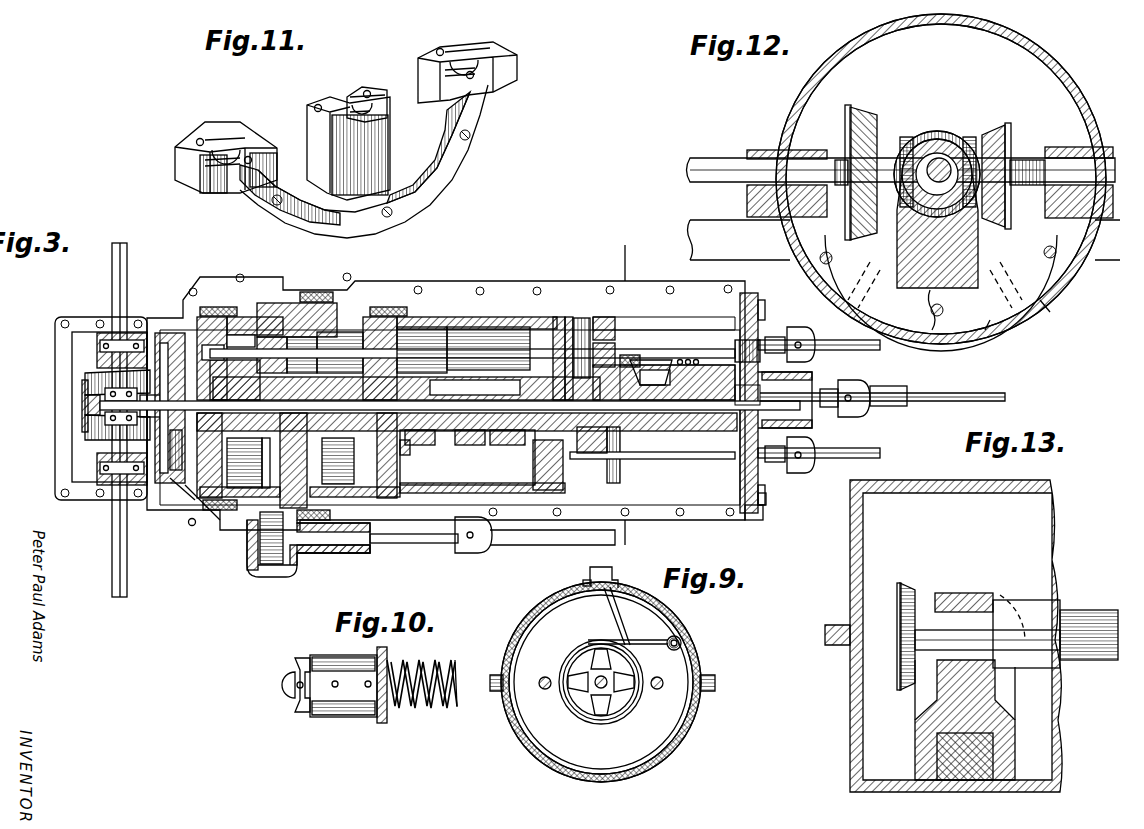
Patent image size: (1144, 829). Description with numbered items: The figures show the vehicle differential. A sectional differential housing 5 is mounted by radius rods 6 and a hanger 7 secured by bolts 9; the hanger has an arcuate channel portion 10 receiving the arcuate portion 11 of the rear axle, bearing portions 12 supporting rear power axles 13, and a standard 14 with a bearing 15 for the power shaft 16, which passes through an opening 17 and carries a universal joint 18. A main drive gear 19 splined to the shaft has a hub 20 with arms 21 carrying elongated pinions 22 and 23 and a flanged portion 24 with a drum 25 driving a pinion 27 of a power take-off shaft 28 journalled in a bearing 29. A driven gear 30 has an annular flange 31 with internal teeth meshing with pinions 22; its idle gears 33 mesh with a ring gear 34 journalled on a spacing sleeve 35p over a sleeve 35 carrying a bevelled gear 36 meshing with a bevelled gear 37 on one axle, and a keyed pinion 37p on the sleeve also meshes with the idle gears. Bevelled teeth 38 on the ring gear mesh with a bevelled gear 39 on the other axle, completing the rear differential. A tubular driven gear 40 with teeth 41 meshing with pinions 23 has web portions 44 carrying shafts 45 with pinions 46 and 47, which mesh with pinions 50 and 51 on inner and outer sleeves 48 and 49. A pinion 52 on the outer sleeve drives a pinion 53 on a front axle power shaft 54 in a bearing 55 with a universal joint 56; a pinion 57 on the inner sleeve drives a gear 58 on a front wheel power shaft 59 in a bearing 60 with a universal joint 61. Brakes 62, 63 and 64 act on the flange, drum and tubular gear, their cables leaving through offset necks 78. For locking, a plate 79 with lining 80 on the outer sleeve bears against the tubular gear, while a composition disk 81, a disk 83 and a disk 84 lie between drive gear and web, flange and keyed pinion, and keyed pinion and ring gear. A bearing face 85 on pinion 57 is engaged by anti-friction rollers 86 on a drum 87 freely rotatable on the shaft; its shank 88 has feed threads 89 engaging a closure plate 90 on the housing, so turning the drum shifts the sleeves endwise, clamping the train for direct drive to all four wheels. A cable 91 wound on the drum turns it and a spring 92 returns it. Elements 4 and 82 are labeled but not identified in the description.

In FIG. 3, the end plate 4 is at (175, 300).
In FIG. 3, the differential housing 5 is at (290, 303).
In FIG. 9, the differential housing 5 is at (680, 638).
In FIG. 3, the radius rods 6 is at (438, 281).
In FIG. 11, the hanger 7 is at (455, 176).
In FIG. 12, the hanger 7 is at (904, 179).
In FIG. 13, the hanger 7 is at (915, 748).
In FIG. 3, the bolts 9 is at (624, 393).
In FIG. 12, the bolts 9 is at (1048, 308).
In FIG. 11, the arcuate shaped portion 10 is at (478, 130).
In FIG. 12, the arcuate shaped portion 10 is at (938, 293).
In FIG. 12, the arcuate portion of the rear axle 11 is at (1000, 322).
In FIG. 13, the arcuate portion of the rear axle 11 is at (993, 755).
In FIG. 11, the bearing portions 12 is at (518, 80).
In FIG. 3, the rear power axles 13 is at (117, 272).
In FIG. 12, the rear power axles 13 is at (712, 160).
In FIG. 11, the standard 14 is at (310, 127).
In FIG. 12, the standard 14 is at (975, 242).
In FIG. 11, the bearing 15 is at (365, 88).
In FIG. 12, the bearing 15 is at (900, 220).
In FIG. 13, the bearing 15 is at (995, 685).
In FIG. 3, the power shaft 16 is at (942, 394).
In FIG. 12, the power shaft 16 is at (940, 158).
In FIG. 9, the power shaft 16 is at (598, 692).
In FIG. 3, the opening 17 is at (752, 520).
In FIG. 9, the opening 17 is at (675, 727).
In FIG. 3, the universal joint 18 is at (870, 417).
In FIG. 3, the main drive gear 19 is at (251, 463).
In FIG. 3, the hub 20 is at (467, 460).
In FIG. 3, the arms 21 is at (388, 320).
In FIG. 3, the pinions 22 is at (258, 303).
In FIG. 3, the pinions 23 is at (350, 325).
In FIG. 3, the flanged portion 24 is at (281, 463).
In FIG. 3, the drum 25 is at (318, 292).
In FIG. 3, the pinion 27 is at (270, 572).
In FIG. 3, the power take-off shaft 28 is at (405, 544).
In FIG. 3, the bearing 29 is at (365, 553).
In FIG. 3, the driven gear 30 is at (200, 530).
In FIG. 3, the annular flange 31 is at (226, 317).
In FIG. 3, the idle gears 33 is at (185, 330).
In FIG. 3, the ring gear 34 is at (185, 340).
In FIG. 3, the sleeve 35 is at (100, 418).
In FIG. 13, the sleeve 35 is at (965, 605).
In FIG. 3, the spacing sleeve 35p is at (125, 470).
In FIG. 13, the spacing sleeve 35p is at (1025, 598).
In FIG. 3, the bevelled gear 36 is at (84, 395).
In FIG. 12, the bevelled gear 36 is at (920, 132).
In FIG. 13, the bevelled gear 36 is at (912, 595).
In FIG. 3, the bevelled gear 37 is at (90, 375).
In FIG. 12, the bevelled gear 37 is at (1008, 140).
In FIG. 3, the pinion 37p is at (172, 372).
In FIG. 3, the bevelled gear teeth 38 is at (175, 480).
In FIG. 3, the bevelled gear 39 is at (95, 440).
In FIG. 12, the bevelled gear 39 is at (848, 140).
In FIG. 3, the tubular driven gear 40 is at (462, 318).
In FIG. 3, the teeth 41 is at (382, 317).
In FIG. 3, the web portions 44 is at (535, 465).
In FIG. 3, the shafts 45 is at (584, 340).
In FIG. 3, the pinions 46 is at (406, 387).
In FIG. 3, the pinions 47 is at (483, 335).
In FIG. 3, the inner sleeve 48 is at (429, 435).
In FIG. 3, the outer sleeve 49 is at (470, 442).
In FIG. 3, the pinion 50 is at (416, 451).
In FIG. 3, the pinion 51 is at (507, 444).
In FIG. 3, the pinion 52 is at (612, 370).
In FIG. 3, the pinion 53 is at (600, 320).
In FIG. 3, the front axle power shaft 54 is at (847, 351).
In FIG. 9, the front axle power shaft 54 is at (545, 677).
In FIG. 3, the bearing 55 is at (616, 335).
In FIG. 3, the universal joint 56 is at (800, 335).
In FIG. 3, the pinion 57 is at (640, 368).
In FIG. 3, the gear 58 is at (628, 476).
In FIG. 3, the front wheel power shaft 59 is at (880, 455).
In FIG. 9, the front wheel power shaft 59 is at (657, 677).
In FIG. 3, the bearing 60 is at (525, 542).
In FIG. 3, the universal joint 61 is at (800, 470).
In FIG. 3, the brake 62 is at (218, 306).
In FIG. 3, the brake 63 is at (335, 320).
In FIG. 3, the brake 64 is at (410, 307).
In FIG. 9, the offset neck 78 is at (585, 580).
In FIG. 3, the plate 79 is at (583, 320).
In FIG. 3, the lining 80 is at (558, 318).
In FIG. 3, the composition disk 81 is at (348, 461).
In FIG. 3, the pin 82 is at (202, 512).
In FIG. 3, the disk 83 is at (190, 500).
In FIG. 3, the disk 84 is at (172, 447).
In FIG. 3, the bearing face 85 is at (632, 443).
In FIG. 3, the anti-friction rollers 86 is at (747, 395).
In FIG. 9, the anti-friction rollers 86 is at (625, 700).
In FIG. 10, the anti-friction rollers 86 is at (298, 705).
In FIG. 3, the drum 87 is at (677, 382).
In FIG. 9, the drum 87 is at (585, 695).
In FIG. 10, the drum 87 is at (355, 710).
In FIG. 3, the shank 88 is at (800, 378).
In FIG. 10, the shank 88 is at (455, 698).
In FIG. 3, the feed threads 89 is at (762, 350).
In FIG. 10, the feed threads 89 is at (440, 666).
In FIG. 3, the closure plate 90 is at (766, 496).
In FIG. 9, the closure plate 90 is at (688, 705).
In FIG. 3, the cable 91 is at (682, 378).
In FIG. 9, the cable 91 is at (620, 620).
In FIG. 3, the spring 92 is at (665, 355).
In FIG. 9, the spring 92 is at (592, 638).